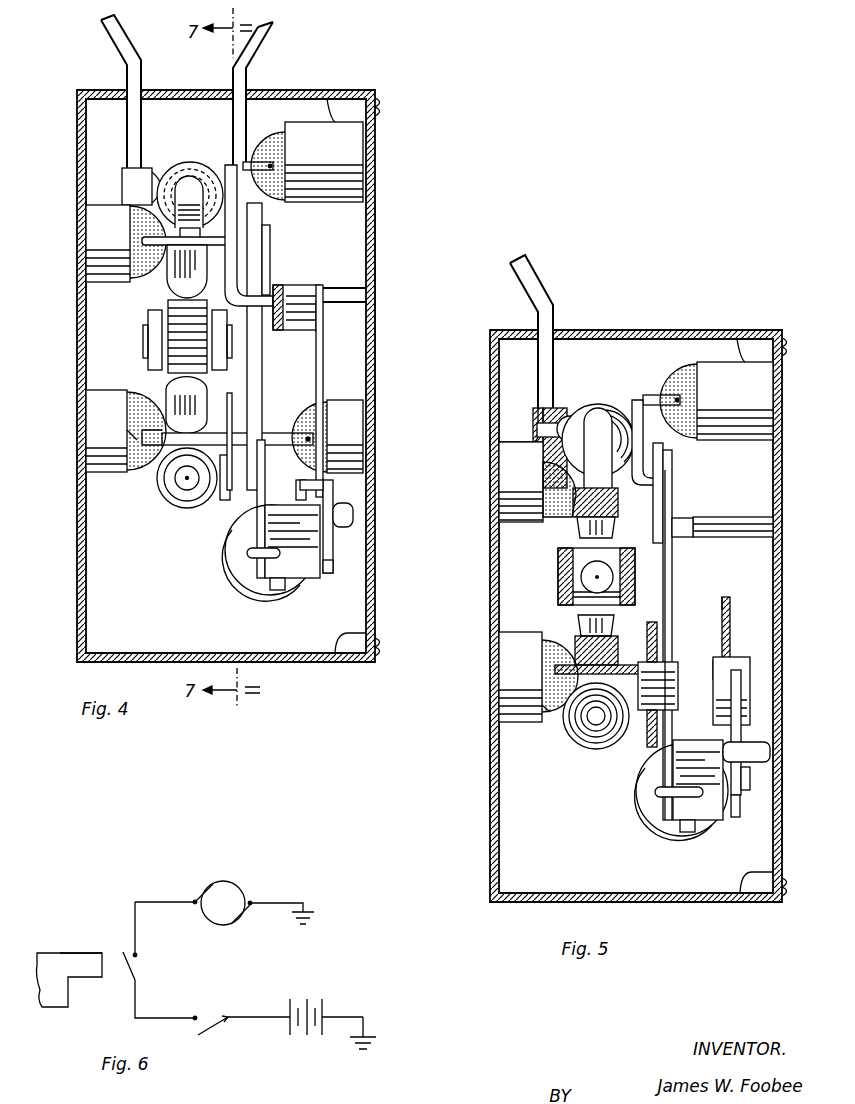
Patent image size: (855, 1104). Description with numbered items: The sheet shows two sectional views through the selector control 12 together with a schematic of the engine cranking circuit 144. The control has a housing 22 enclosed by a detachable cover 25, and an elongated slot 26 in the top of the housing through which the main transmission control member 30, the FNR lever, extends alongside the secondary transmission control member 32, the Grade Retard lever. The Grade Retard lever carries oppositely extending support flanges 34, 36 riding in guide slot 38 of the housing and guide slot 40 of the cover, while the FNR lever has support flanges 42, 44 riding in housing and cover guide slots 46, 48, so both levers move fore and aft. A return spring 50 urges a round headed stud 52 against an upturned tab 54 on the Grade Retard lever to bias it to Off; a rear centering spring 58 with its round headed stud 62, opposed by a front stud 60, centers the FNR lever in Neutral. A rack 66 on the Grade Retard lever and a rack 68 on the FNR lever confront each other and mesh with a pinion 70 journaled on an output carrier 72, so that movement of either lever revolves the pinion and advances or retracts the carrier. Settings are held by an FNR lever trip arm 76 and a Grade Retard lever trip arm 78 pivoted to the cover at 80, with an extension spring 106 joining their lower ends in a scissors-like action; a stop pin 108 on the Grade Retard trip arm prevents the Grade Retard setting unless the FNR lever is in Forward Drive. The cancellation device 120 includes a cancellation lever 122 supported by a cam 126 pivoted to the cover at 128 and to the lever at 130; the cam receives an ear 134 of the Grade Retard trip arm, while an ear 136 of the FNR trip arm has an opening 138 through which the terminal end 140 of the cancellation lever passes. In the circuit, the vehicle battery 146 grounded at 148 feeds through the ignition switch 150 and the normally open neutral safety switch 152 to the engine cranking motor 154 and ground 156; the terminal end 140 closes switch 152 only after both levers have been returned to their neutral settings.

In FIG. 4, the selector control 12 is at (378, 276).
In FIG. 5, the selector control 12 is at (492, 772).
In FIG. 4, the housing 22 is at (335, 95).
In FIG. 5, the housing 22 is at (770, 897).
In FIG. 4, the cover 25 is at (378, 262).
In FIG. 5, the cover 25 is at (790, 810).
In FIG. 5, the elongated slot 26 is at (645, 331).
In FIG. 4, the main transmission control member 30 is at (258, 36).
In FIG. 5, the main transmission control member 30 is at (666, 628).
In FIG. 4, the secondary transmission control member 32 is at (120, 48).
In FIG. 5, the secondary transmission control member 32 is at (536, 290).
In FIG. 4, the support flange 34 is at (160, 265).
In FIG. 5, the support flange 34 is at (548, 478).
In FIG. 4, the support flange 36 is at (262, 160).
In FIG. 5, the support flange 36 is at (660, 400).
In FIG. 4, the guide slot 38 is at (142, 242).
In FIG. 5, the guide slot 38 is at (568, 506).
In FIG. 4, the guide slot 40 is at (273, 166).
In FIG. 5, the guide slot 40 is at (680, 395).
In FIG. 4, the support flange 42 is at (133, 452).
In FIG. 5, the support flange 42 is at (558, 702).
In FIG. 4, the support flange 44 is at (300, 430).
In FIG. 4, the guide slot 46 is at (132, 424).
In FIG. 5, the guide slot 46 is at (566, 656).
In FIG. 4, the guide slot 48 is at (328, 440).
In FIG. 4, the return spring 50 is at (170, 170).
In FIG. 4, the round headed stud 52 is at (190, 165).
In FIG. 5, the round headed stud 52 is at (584, 410).
In FIG. 4, the upturned tab 54 is at (192, 188).
In FIG. 5, the upturned tab 54 is at (600, 430).
In FIG. 4, the rear centering spring 58 is at (205, 503).
In FIG. 5, the round headed stud 60 is at (593, 752).
In FIG. 4, the round headed stud 62 is at (176, 505).
In FIG. 4, the rack 66 is at (170, 298).
In FIG. 5, the rack 66 is at (614, 505).
In FIG. 4, the rack 68 is at (172, 402).
In FIG. 5, the rack 68 is at (617, 642).
In FIG. 4, the pinion 70 is at (176, 357).
In FIG. 4, the output carrier 72 is at (150, 342).
In FIG. 5, the output carrier 72 is at (596, 576).
In FIG. 4, the FNR lever trip arm 76 is at (272, 246).
In FIG. 5, the FNR lever trip arm 76 is at (676, 493).
In FIG. 4, the Grade Retard lever trip arm 78 is at (266, 366).
In FIG. 5, the Grade Retard lever trip arm 78 is at (674, 610).
In FIG. 4, the pivot 80 is at (276, 285).
In FIG. 5, the pivot 80 is at (694, 525).
In FIG. 4, the extension spring 106 is at (295, 593).
In FIG. 5, the extension spring 106 is at (658, 826).
In FIG. 5, the stop pin 108 is at (648, 742).
In FIG. 4, the cancellation device 120 is at (335, 365).
In FIG. 4, the cancellation lever 122 is at (326, 346).
In FIG. 5, the cancellation lever 122 is at (728, 618).
In FIG. 6, the cancellation lever 122 is at (80, 953).
In FIG. 4, the cam 126 is at (345, 540).
In FIG. 5, the cam 126 is at (735, 820).
In FIG. 4, the pivot 128 is at (350, 508).
In FIG. 5, the pivot 128 is at (765, 748).
In FIG. 5, the pivot 130 is at (752, 700).
In FIG. 4, the ear 134 is at (335, 572).
In FIG. 5, the ear 134 is at (752, 780).
In FIG. 5, the ear 136 is at (735, 665).
In FIG. 4, the opening 138 is at (300, 490).
In FIG. 5, the opening 138 is at (716, 660).
In FIG. 6, the terminal end 140 is at (106, 966).
In FIG. 6, the engine cranking circuit 144 is at (140, 1002).
In FIG. 6, the vehicle battery 146 is at (290, 1008).
In FIG. 6, the ground 148 is at (365, 1032).
In FIG. 6, the ignition switch 150 is at (215, 1027).
In FIG. 6, the neutral safety switch 152 is at (138, 965).
In FIG. 6, the engine cranking motor 154 is at (215, 882).
In FIG. 6, the ground 156 is at (306, 908).